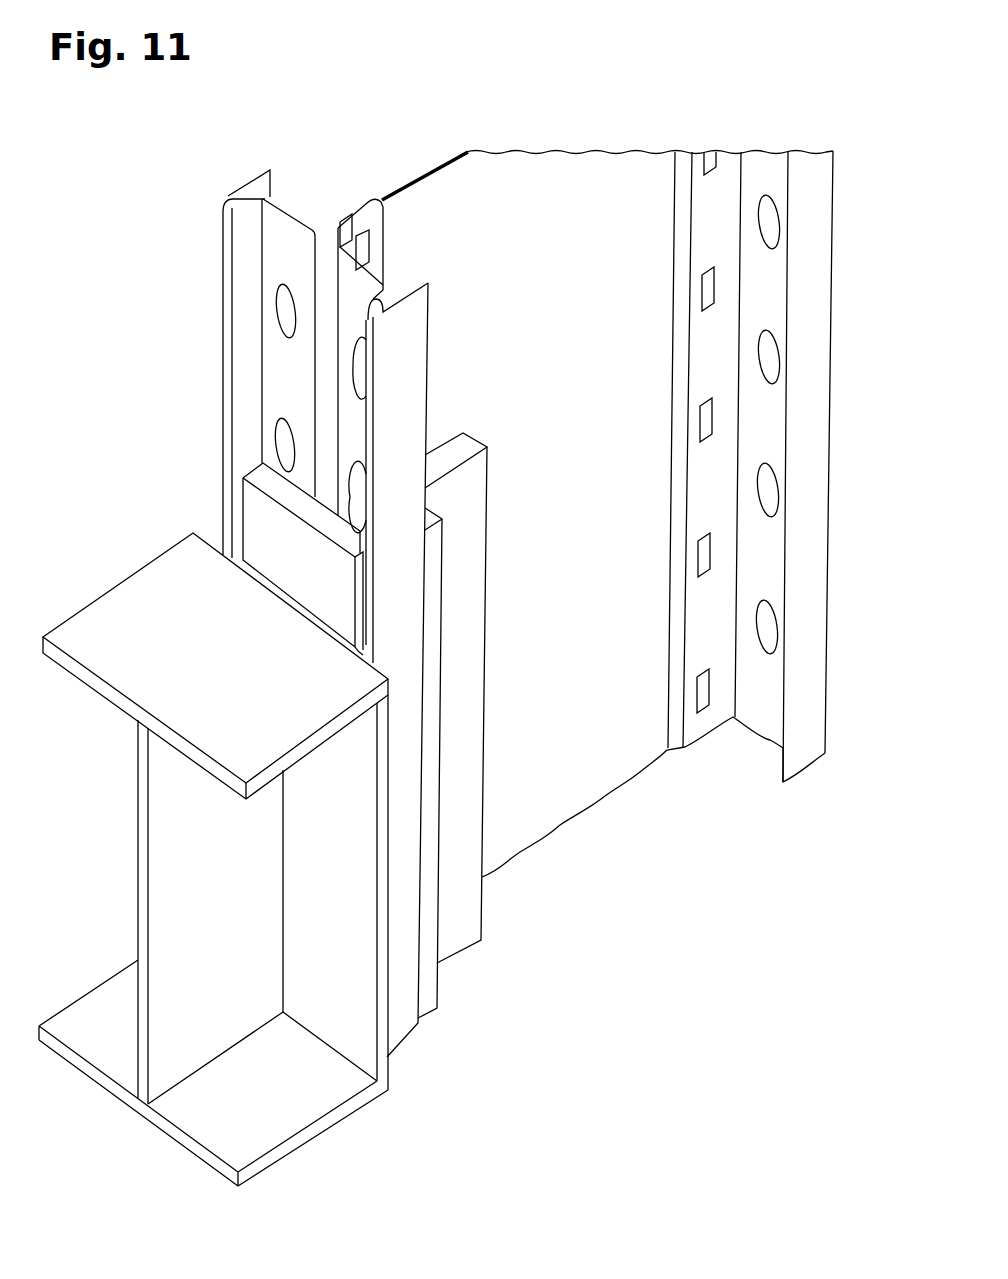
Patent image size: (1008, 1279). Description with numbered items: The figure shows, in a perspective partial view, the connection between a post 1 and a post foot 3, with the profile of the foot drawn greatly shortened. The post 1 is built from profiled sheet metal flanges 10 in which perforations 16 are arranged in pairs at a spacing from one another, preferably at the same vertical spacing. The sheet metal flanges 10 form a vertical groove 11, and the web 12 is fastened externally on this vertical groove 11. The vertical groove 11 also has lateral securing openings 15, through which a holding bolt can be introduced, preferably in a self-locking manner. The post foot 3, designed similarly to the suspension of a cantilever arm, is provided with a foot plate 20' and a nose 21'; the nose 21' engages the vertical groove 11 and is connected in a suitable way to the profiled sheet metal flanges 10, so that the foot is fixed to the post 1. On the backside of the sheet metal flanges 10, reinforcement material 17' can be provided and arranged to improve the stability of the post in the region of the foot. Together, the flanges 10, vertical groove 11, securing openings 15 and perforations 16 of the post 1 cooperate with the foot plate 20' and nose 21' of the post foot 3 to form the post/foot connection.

The post 1 is at (582, 140).
The post foot 3 is at (345, 1122).
The flanges 10 is at (230, 263).
The vertical groove 11 is at (362, 217).
The web 12 is at (548, 810).
The lateral securing openings 15 is at (700, 693).
The perforations 16 is at (769, 605).
The reinforcement material 17' is at (482, 725).
The foot plate 20' is at (256, 559).
The nose 21' is at (260, 476).